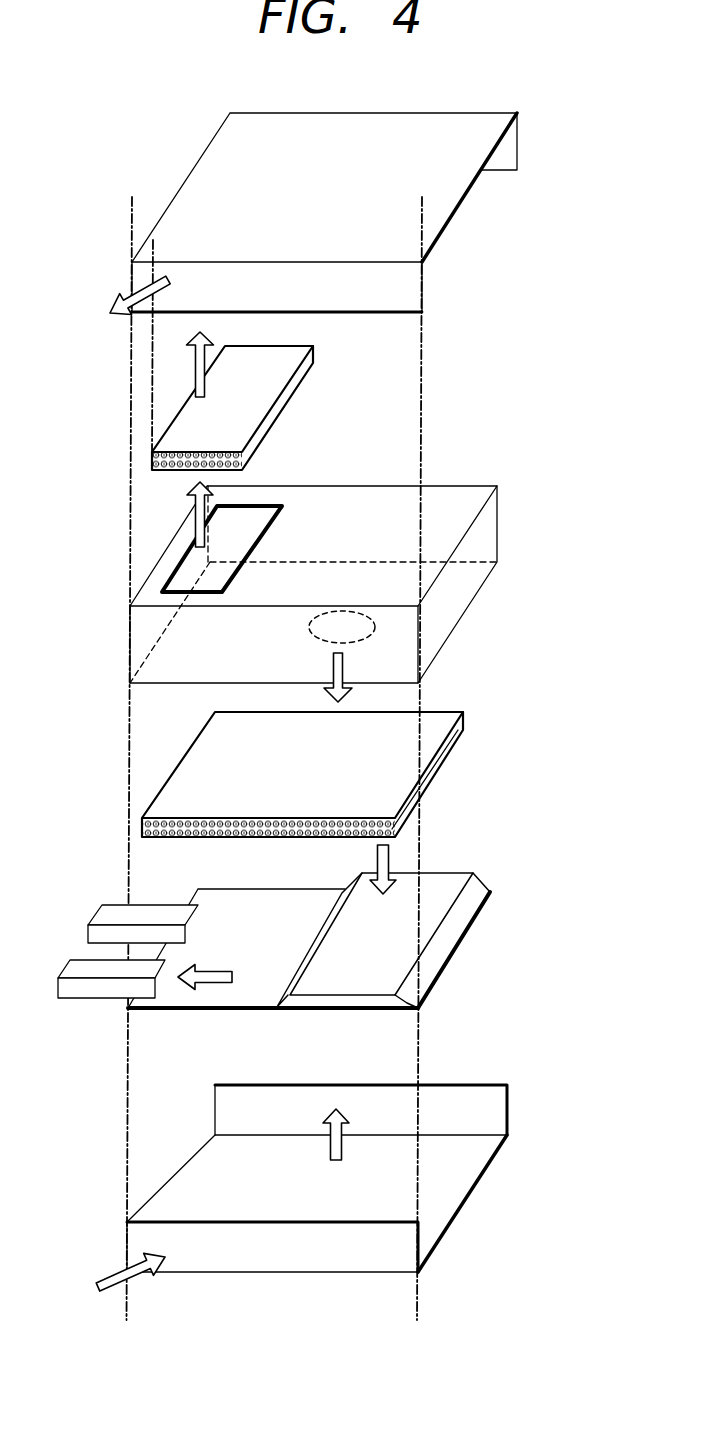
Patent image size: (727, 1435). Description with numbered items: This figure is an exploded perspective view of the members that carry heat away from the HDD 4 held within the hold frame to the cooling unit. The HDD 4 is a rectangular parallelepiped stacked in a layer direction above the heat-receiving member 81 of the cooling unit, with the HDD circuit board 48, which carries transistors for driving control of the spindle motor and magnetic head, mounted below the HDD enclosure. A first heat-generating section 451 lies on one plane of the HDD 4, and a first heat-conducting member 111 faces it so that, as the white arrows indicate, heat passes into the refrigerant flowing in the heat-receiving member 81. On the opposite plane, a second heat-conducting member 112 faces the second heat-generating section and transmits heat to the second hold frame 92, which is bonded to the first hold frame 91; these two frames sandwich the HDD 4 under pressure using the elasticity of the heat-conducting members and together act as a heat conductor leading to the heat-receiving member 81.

The second hold frame 92 is at (432, 192).
The second heat-conducting member 112 is at (188, 427).
The HDD 4 is at (428, 522).
The HDD circuit board 48 is at (197, 568).
The first heat-generating section 451 is at (353, 632).
The first heat-conducting member 111 is at (380, 775).
The heat-receiving member 81 is at (378, 933).
The first hold frame 91 is at (425, 1188).